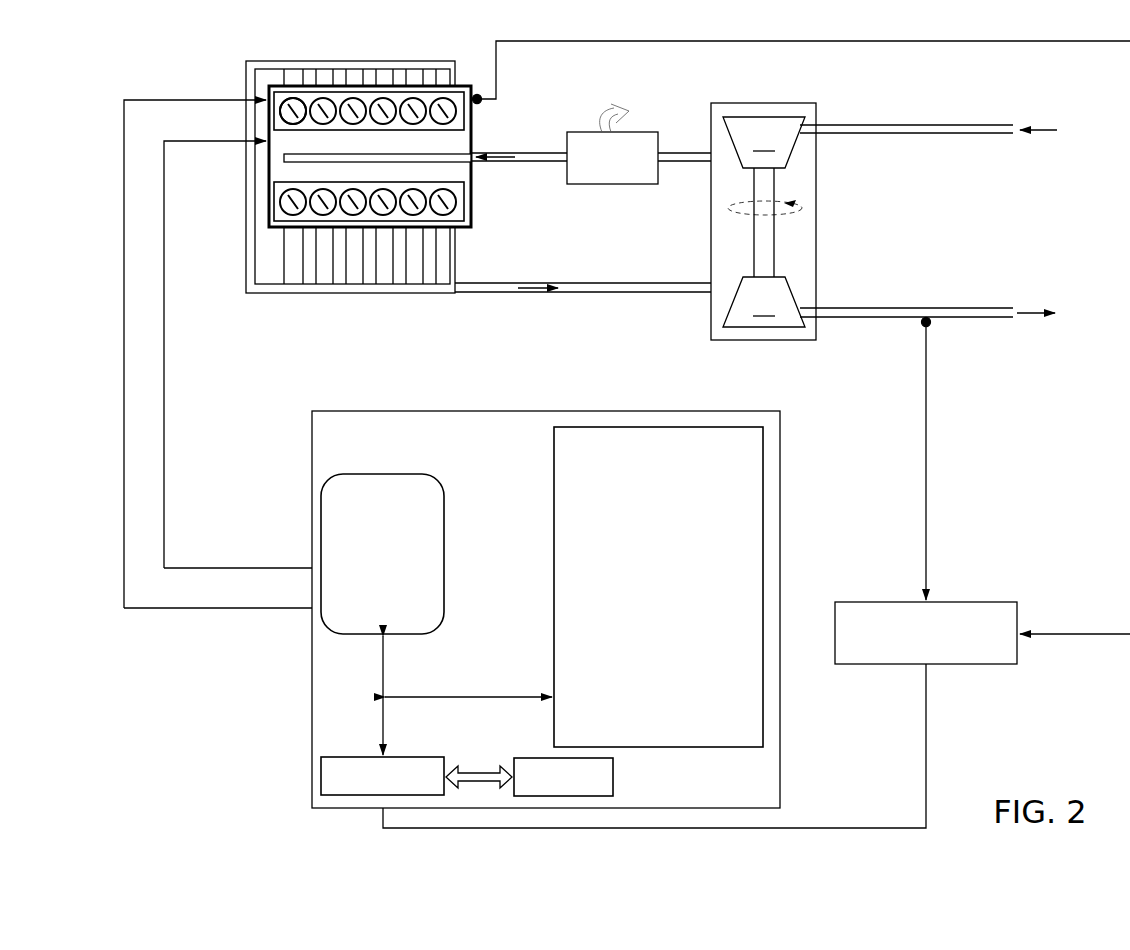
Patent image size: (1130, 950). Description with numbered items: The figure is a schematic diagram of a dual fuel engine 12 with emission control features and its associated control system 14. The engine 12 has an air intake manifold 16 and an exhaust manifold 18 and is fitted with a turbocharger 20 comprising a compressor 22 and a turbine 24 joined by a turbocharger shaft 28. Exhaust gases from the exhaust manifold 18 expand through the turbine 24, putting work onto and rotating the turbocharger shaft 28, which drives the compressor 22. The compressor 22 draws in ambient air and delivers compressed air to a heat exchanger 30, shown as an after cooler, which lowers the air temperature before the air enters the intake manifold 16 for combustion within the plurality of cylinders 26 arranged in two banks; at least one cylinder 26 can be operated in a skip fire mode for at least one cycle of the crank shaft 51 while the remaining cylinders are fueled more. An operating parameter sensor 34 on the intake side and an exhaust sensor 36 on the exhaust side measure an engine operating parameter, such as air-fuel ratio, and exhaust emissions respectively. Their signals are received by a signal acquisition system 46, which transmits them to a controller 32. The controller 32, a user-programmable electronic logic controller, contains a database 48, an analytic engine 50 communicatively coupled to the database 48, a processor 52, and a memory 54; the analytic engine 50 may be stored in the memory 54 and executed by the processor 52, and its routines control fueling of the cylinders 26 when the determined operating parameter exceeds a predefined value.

The engine 12 is at (273, 302).
The control system 14 is at (295, 773).
The air intake manifold 16 is at (540, 164).
The exhaust manifold 18 is at (642, 283).
The turbocharger 20 is at (817, 190).
The compressor 22 is at (898, 132).
The turbine 24 is at (909, 302).
The cylinders 26 is at (350, 214).
The turbocharger shaft 28 is at (776, 252).
The heat exchanger 30 is at (613, 187).
The controller 32 is at (363, 410).
The operating parameter sensor 34 is at (476, 94).
The exhaust sensor 36 is at (929, 326).
The signal acquisition system 46 is at (972, 602).
The database 48 is at (440, 480).
The analytic engine 50 is at (763, 460).
The crank shaft 51 is at (296, 98).
The processor 52 is at (338, 755).
The memory 54 is at (615, 777).